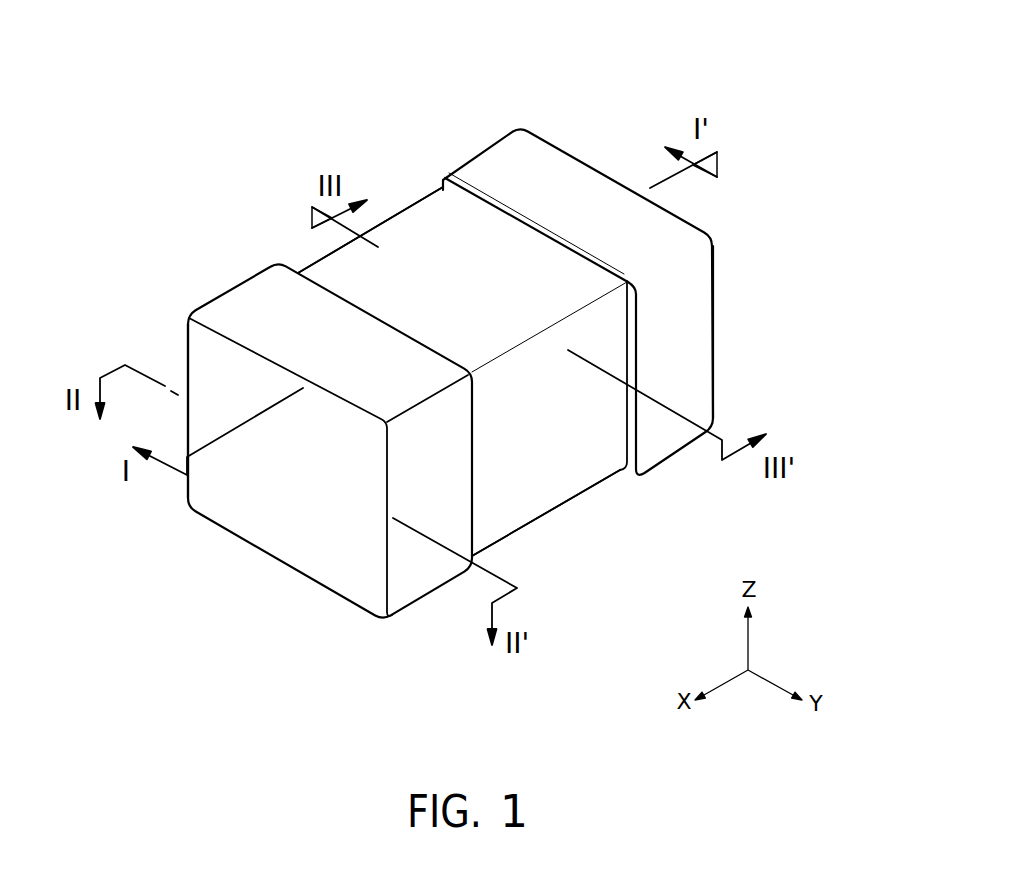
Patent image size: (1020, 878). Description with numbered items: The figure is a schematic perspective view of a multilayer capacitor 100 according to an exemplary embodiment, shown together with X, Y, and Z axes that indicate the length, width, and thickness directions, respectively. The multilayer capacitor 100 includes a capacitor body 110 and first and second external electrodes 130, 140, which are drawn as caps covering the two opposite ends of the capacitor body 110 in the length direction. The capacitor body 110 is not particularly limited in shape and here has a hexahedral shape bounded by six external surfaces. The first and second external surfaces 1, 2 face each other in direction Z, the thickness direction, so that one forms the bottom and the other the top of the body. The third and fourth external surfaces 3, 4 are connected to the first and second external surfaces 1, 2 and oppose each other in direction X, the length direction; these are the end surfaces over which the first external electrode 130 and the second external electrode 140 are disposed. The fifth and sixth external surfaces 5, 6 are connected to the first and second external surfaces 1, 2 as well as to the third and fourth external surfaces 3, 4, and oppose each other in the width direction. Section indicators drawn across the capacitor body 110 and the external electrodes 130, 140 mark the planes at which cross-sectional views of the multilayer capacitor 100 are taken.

The multilayer capacitor 100 is at (477, 41).
The capacitor body 110 is at (493, 367).
The first external electrode 130 is at (330, 477).
The second external electrode 140 is at (652, 272).
The first external surface 1 is at (509, 514).
The second external surface 2 is at (547, 288).
The third external surface 3 is at (276, 492).
The fourth external surface 4 is at (588, 187).
The fifth external surface 5 is at (424, 231).
The sixth external surface 6 is at (571, 451).